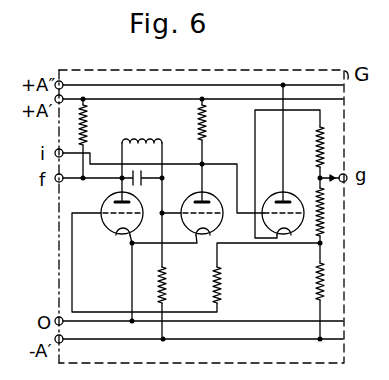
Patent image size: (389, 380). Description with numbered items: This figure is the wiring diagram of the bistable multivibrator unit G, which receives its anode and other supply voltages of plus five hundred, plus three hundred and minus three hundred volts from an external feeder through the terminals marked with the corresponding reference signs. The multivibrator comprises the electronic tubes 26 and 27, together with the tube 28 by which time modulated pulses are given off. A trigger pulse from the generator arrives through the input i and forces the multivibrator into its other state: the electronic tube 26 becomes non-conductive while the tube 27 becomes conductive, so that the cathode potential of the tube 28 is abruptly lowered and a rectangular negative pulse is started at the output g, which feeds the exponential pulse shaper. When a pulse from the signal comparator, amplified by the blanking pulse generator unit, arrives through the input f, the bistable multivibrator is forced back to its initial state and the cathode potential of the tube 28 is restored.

The electronic tube 26 is at (103, 226).
The electronic tube 27 is at (222, 225).
The tube 28 is at (293, 194).